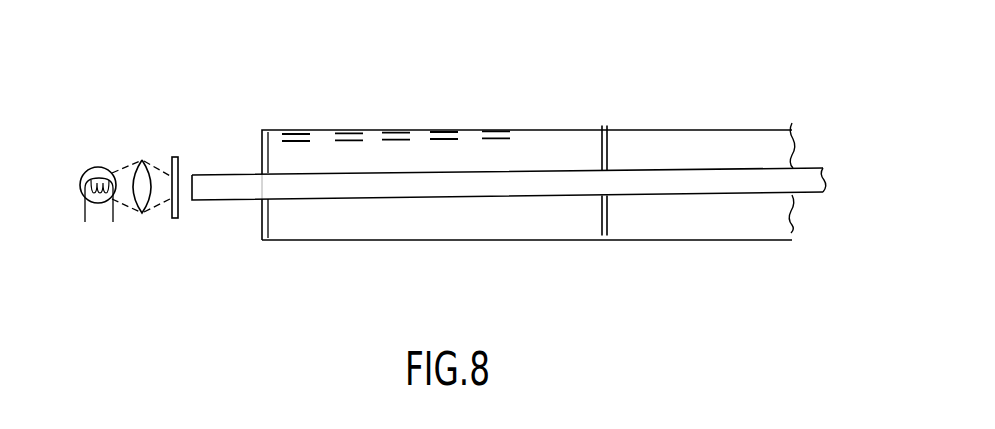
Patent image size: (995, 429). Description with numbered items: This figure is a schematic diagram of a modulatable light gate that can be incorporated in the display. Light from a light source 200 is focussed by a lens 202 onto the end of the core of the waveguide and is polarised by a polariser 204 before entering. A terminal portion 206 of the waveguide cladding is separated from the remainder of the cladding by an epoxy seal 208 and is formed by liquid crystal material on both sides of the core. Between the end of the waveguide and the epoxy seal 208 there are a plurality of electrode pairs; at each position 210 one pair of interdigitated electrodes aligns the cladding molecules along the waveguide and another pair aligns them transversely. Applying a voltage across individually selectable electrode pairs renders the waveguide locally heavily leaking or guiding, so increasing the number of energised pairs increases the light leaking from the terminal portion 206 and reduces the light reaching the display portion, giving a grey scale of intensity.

The light source 200 is at (98, 167).
The lens 202 is at (147, 162).
The polariser 204 is at (177, 219).
The terminal portion of the waveguide cladding 206 is at (370, 238).
The epoxy seal 208 is at (605, 237).
The electrode pair position 210 is at (398, 133).